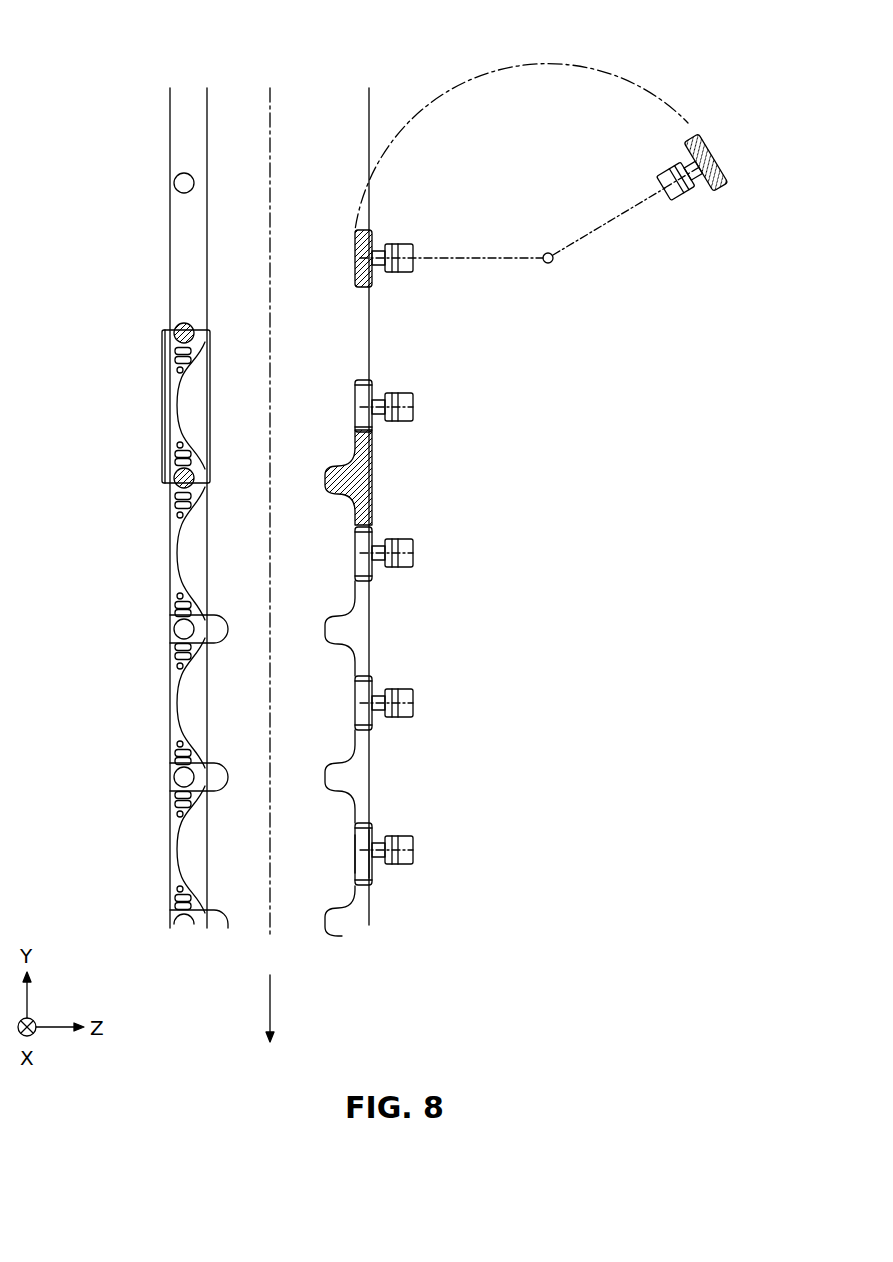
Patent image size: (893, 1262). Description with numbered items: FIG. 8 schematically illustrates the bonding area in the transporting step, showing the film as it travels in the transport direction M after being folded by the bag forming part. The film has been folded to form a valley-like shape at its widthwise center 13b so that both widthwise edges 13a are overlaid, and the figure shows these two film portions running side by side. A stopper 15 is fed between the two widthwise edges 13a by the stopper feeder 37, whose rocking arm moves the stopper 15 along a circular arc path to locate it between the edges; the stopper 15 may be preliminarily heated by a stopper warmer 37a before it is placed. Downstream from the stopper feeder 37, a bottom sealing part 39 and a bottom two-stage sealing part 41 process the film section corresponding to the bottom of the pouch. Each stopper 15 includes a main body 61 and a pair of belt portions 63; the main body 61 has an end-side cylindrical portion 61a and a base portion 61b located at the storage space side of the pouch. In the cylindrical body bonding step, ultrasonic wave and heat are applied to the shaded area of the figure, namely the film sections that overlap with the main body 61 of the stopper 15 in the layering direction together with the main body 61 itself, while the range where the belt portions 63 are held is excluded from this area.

The widthwise edges 13a is at (371, 330).
The widthwise center 13b is at (170, 258).
The stopper 15 is at (419, 838).
The stopper feeder 37 is at (577, 60).
The stopper warmer 37a is at (700, 135).
The bottom sealing part 39 is at (162, 427).
The bottom 2-stage sealing part 41 is at (170, 624).
The main body 61 is at (374, 854).
The cylindrical portion 61a is at (377, 840).
The base portion 61b is at (356, 840).
The belt portions 63 is at (360, 823).
The movement direction M is at (275, 1000).